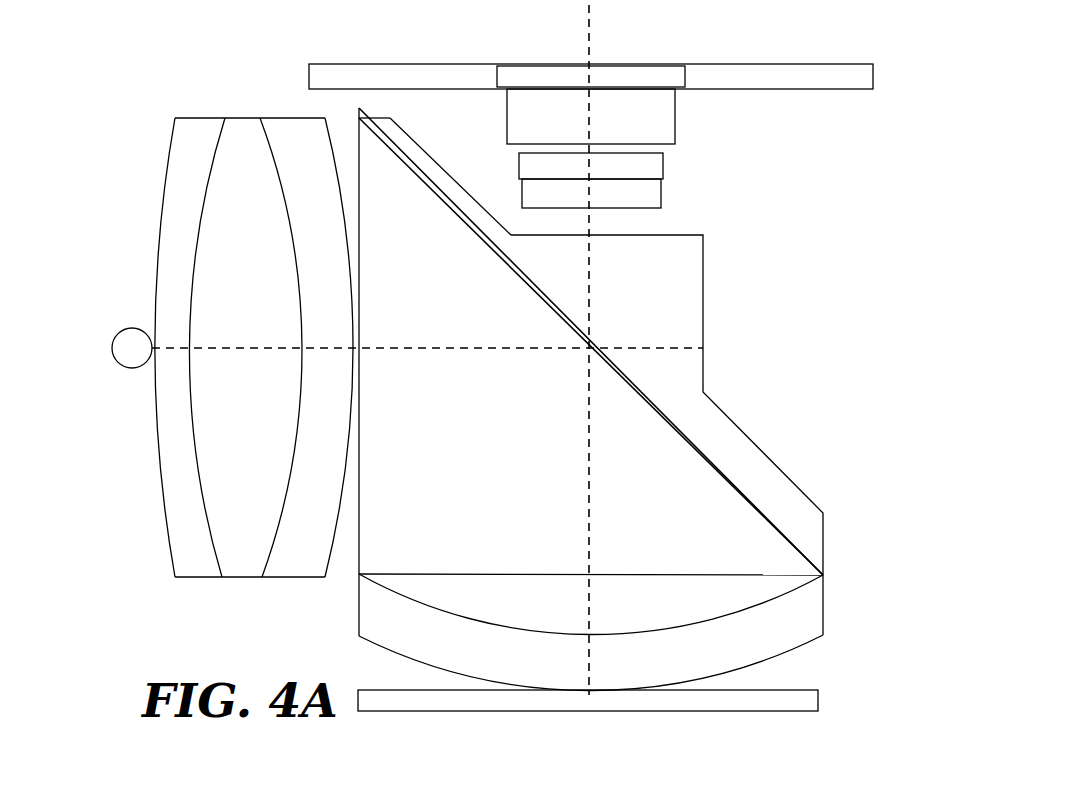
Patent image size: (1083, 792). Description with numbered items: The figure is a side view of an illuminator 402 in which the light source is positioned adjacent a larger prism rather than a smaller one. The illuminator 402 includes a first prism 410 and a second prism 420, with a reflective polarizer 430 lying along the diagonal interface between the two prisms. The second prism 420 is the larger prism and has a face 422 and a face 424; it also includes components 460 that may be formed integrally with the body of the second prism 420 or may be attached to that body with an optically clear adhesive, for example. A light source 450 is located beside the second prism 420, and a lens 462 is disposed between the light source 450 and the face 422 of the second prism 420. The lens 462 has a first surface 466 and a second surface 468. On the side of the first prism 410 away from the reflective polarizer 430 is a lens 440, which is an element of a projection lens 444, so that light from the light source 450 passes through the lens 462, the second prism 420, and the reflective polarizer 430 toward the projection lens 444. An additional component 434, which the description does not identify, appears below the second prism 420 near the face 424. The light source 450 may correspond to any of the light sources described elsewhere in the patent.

The illuminator 402 is at (106, 96).
The first prism 410 is at (682, 248).
The second prism 420 is at (380, 549).
The face of second prism 422 is at (358, 130).
The face of second prism 424 is at (813, 640).
The reflective polarizer 430 is at (777, 527).
The substrate 434 is at (803, 700).
The lens 440 is at (642, 193).
The projection lens 444 is at (628, 191).
The light source 450 is at (127, 350).
The components 460 is at (702, 597).
The lens 462 is at (238, 465).
The first surface 466 is at (169, 183).
The second surface 468 is at (330, 545).